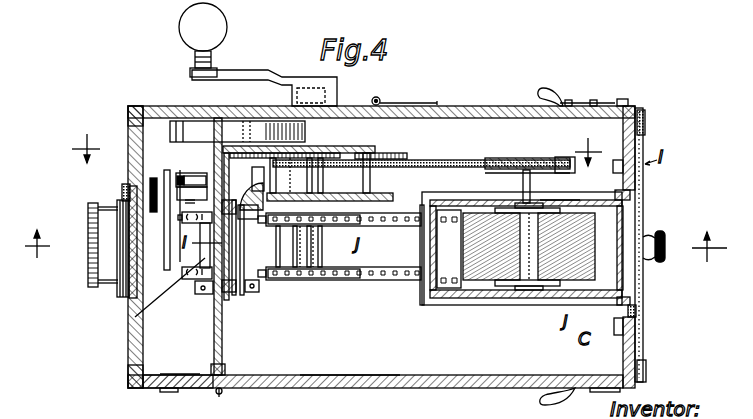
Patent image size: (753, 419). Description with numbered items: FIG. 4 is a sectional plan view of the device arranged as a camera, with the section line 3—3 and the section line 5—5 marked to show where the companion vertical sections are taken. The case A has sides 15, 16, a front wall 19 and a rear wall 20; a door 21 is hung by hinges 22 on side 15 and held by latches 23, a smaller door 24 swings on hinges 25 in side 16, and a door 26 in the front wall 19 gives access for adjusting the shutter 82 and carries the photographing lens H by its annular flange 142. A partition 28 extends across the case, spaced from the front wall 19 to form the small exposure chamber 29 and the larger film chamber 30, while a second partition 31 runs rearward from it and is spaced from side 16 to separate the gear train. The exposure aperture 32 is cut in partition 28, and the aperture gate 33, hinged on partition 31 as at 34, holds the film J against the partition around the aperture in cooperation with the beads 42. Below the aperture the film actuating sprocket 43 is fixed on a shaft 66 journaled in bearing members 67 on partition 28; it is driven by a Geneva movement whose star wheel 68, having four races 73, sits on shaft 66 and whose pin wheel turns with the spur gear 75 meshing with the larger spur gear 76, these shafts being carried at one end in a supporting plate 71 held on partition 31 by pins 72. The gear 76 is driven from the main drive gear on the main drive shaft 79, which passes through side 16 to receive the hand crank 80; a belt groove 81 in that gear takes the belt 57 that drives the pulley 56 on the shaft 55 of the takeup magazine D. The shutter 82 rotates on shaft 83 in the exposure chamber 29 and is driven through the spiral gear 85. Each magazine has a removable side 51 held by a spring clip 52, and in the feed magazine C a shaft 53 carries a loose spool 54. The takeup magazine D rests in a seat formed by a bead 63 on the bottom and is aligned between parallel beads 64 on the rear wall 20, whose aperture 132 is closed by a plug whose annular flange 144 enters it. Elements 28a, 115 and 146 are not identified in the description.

The section line 3— 3 is at (376, 235).
The section line 5— 5 is at (337, 143).
The side 15 is at (184, 393).
The side 16 is at (155, 110).
The front wall 19 is at (133, 372).
The rear wall 20 is at (637, 336).
The door 21 is at (382, 383).
The hinges 22 is at (221, 393).
The latches 23 is at (585, 404).
The door 24 is at (476, 107).
The hinges 25 is at (377, 97).
The door 26 is at (131, 350).
The partition 28 is at (224, 362).
The partition bracket 28a is at (218, 200).
The exposure chamber 29 is at (180, 364).
The film chamber 30 is at (350, 363).
The partition 31 is at (379, 214).
The exposure aperture 32 is at (195, 281).
The aperture gate 33 is at (250, 287).
The hinge mounting 34 is at (250, 222).
The beads 42 is at (205, 296).
The film actuating sprocket 43 is at (207, 253).
The removable side 51 is at (505, 290).
The spring clip 52 is at (426, 306).
The shaft 53 is at (557, 204).
The spool 54 is at (527, 262).
The shaft 55 is at (532, 184).
The pulley 56 is at (535, 155).
The belt 57 is at (432, 160).
The bead 63 is at (457, 192).
The parallel beads 64 is at (633, 196).
The shaft 66 is at (200, 300).
The bearing members 67 is at (188, 216).
The star wheel 68 is at (205, 180).
The supporting plate 71 is at (358, 151).
The pins 72 is at (371, 184).
The races 73 is at (177, 172).
The spur gear 75 is at (228, 151).
The spur gear 76 is at (312, 155).
The main drive shaft 79 is at (292, 97).
The hand crank 80 is at (248, 73).
The belt groove 81 is at (403, 152).
The shutter 82 is at (166, 170).
The shaft 83 is at (150, 185).
The spiral gear 85 is at (263, 196).
The gear 115 is at (118, 208).
The aperture 132 is at (640, 148).
The annular flange 142 is at (124, 190).
The annular flange 144 is at (641, 210).
The knob 146 is at (664, 242).